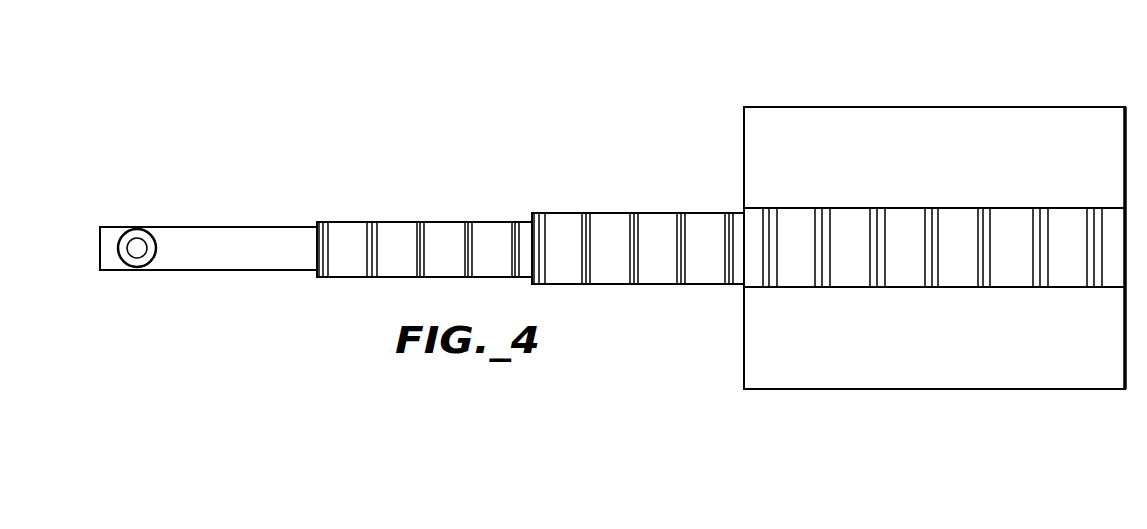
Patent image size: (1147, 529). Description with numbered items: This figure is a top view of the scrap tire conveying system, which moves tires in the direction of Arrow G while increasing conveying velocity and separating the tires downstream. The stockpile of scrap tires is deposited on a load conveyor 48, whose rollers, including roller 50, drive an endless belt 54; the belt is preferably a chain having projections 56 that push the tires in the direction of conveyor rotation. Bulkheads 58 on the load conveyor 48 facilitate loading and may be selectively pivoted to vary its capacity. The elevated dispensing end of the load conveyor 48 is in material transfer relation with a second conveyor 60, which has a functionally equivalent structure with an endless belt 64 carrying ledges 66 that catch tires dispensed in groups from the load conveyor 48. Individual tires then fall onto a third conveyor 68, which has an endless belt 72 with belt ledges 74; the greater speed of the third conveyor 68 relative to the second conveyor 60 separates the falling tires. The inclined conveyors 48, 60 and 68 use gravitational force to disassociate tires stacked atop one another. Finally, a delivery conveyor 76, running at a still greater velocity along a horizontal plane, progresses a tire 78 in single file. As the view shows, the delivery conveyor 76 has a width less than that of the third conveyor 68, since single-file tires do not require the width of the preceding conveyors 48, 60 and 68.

The load conveyor 48 is at (844, 92).
The roller 50 is at (934, 211).
The endless belt 54 is at (852, 275).
The projections 56 is at (988, 212).
The bulkheads 58 is at (1028, 115).
The second conveyor 60 is at (666, 200).
The endless belt 64 is at (700, 275).
The ledges 66 is at (540, 263).
The third conveyor 68 is at (446, 287).
The endless belt 72 is at (398, 268).
The belt ledges 74 is at (420, 222).
The delivery conveyor 76 is at (257, 260).
The tire 78 is at (132, 236).